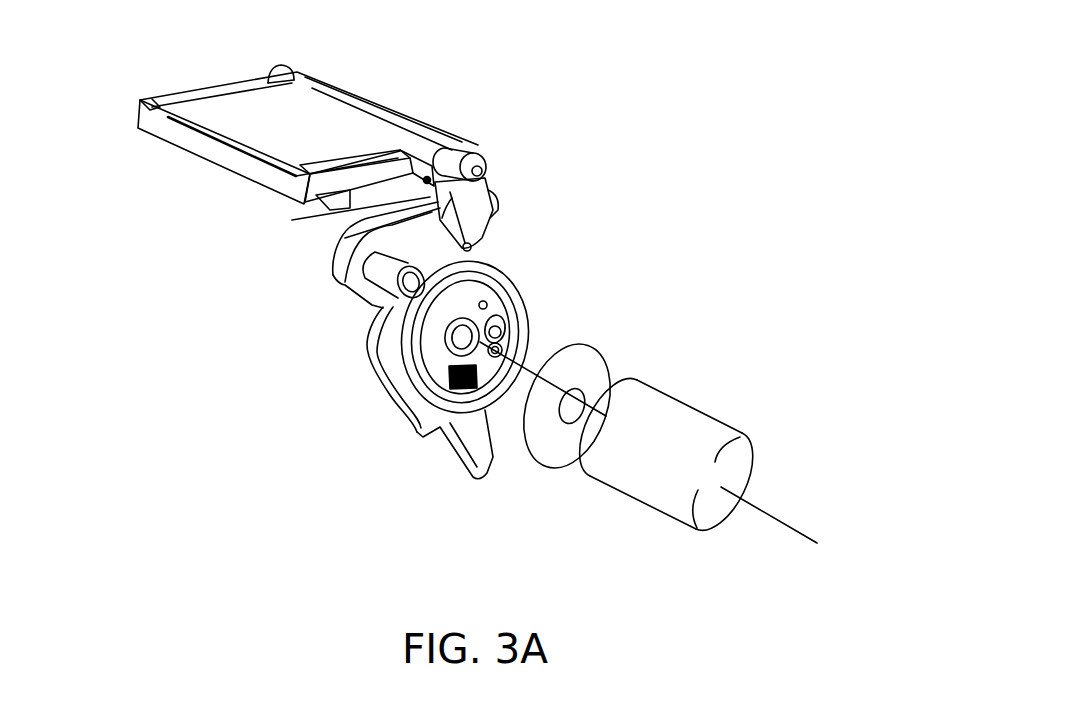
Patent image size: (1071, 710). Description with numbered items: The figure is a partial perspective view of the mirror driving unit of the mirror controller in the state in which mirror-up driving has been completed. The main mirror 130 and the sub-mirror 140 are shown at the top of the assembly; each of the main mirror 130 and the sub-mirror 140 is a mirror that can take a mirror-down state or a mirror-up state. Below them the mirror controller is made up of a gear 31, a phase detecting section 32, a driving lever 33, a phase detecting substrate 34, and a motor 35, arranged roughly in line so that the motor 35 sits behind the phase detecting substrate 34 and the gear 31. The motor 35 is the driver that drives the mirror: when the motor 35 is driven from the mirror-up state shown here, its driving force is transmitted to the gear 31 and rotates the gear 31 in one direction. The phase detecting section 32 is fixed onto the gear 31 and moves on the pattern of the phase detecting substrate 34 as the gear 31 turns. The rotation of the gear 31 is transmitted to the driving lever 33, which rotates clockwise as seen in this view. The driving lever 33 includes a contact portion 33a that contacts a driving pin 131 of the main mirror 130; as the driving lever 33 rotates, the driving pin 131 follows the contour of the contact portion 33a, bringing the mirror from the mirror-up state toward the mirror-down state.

The main mirror 130 is at (250, 137).
The sub-mirror 140 is at (357, 202).
The driving pin 131 is at (480, 158).
The driving lever 33 is at (470, 243).
The contact portion 33a is at (487, 195).
The phase detecting section 32 is at (449, 385).
The gear 31 is at (440, 353).
The phase detecting substrate 34 is at (547, 445).
The motor 35 is at (663, 470).